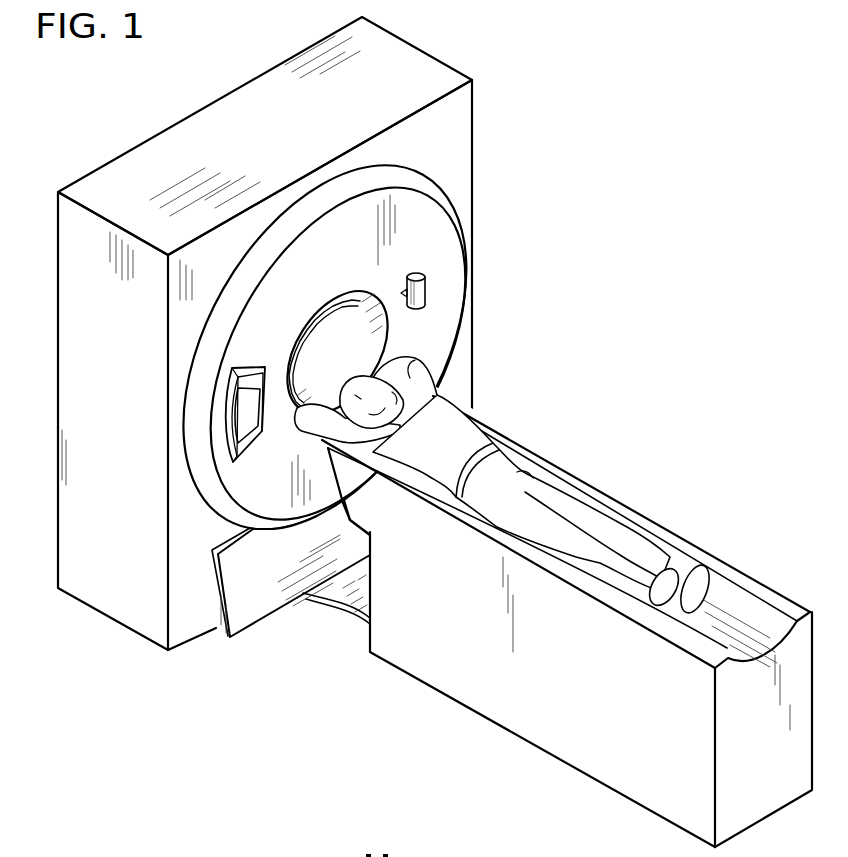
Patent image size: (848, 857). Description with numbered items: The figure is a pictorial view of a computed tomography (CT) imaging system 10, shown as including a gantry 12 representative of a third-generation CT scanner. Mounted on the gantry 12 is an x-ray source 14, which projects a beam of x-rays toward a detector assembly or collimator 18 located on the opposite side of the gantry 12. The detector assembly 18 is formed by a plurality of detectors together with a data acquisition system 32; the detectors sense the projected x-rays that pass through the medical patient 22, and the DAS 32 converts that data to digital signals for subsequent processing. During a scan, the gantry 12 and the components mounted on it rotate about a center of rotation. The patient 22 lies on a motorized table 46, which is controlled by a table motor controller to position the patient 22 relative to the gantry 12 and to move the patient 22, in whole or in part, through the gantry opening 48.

The computed tomography (CT) imaging system 10 is at (622, 290).
The gantry 12 is at (443, 253).
The x-ray source 14 is at (427, 292).
The detector assembly or collimator 18 is at (249, 443).
The medical patient 22 is at (468, 437).
The data acquisition system (DAS) 32 is at (247, 390).
The motorized table 46 is at (609, 765).
The gantry opening 48 is at (333, 320).